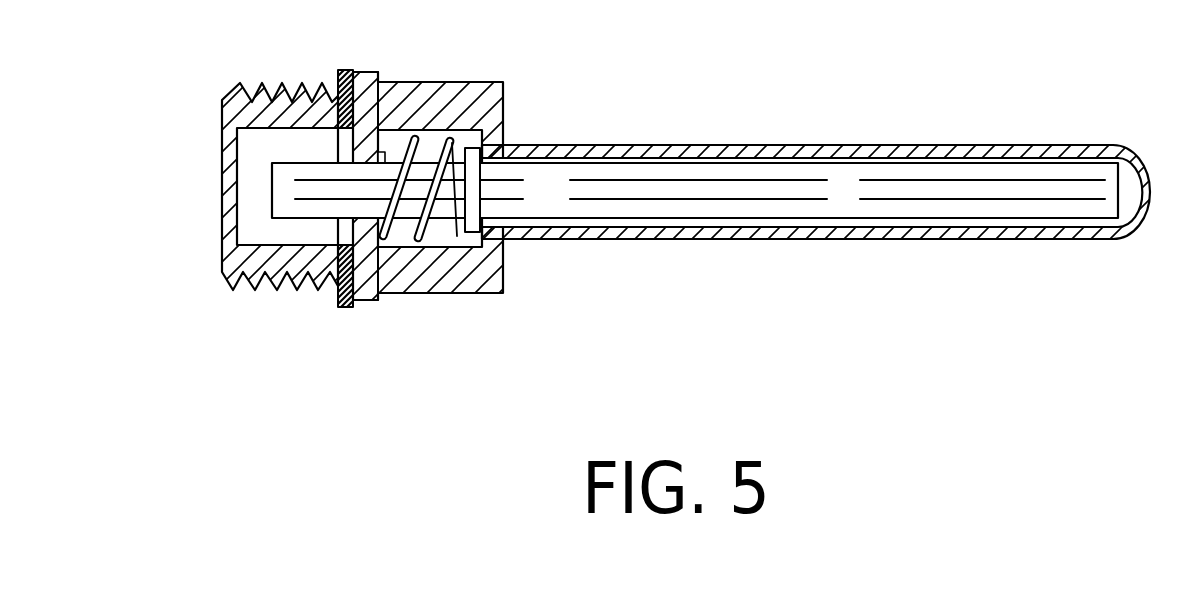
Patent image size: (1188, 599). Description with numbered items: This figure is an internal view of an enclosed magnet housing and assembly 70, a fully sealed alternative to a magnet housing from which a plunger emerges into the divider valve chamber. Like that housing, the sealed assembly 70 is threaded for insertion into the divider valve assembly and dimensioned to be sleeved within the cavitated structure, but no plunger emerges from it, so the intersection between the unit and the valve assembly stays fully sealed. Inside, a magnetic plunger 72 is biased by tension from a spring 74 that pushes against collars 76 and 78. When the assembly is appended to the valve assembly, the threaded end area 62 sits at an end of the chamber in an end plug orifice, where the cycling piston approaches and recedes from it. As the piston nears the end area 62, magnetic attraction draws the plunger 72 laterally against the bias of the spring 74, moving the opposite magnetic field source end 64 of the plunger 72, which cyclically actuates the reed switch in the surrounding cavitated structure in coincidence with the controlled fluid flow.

The threaded end area 62 is at (222, 181).
The magnetic field source end 64 is at (987, 185).
The enclosed magnet housing and assembly 70 is at (638, 234).
The magnetic plunger 72 is at (300, 170).
The spring 74 is at (437, 140).
The collar 76 is at (466, 234).
The collar 78 is at (363, 283).